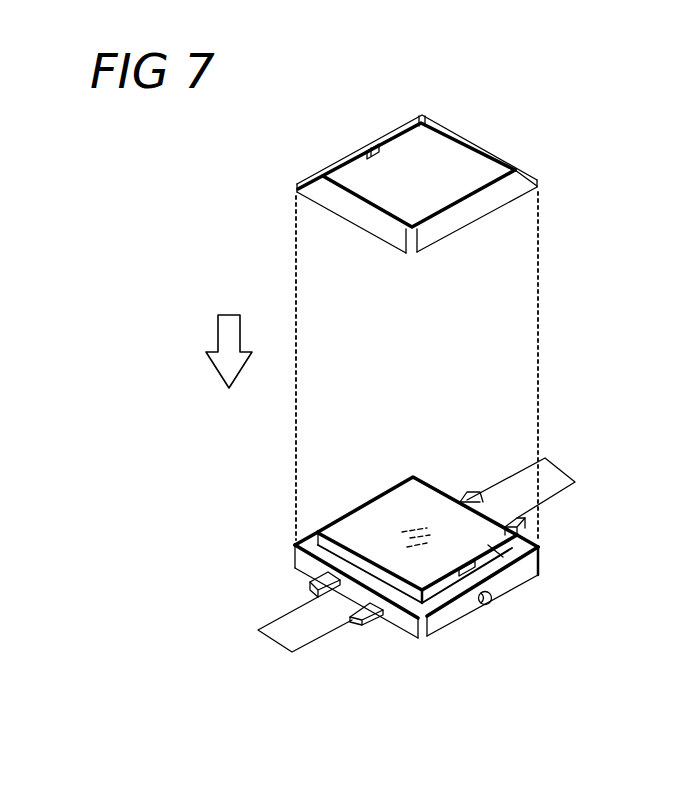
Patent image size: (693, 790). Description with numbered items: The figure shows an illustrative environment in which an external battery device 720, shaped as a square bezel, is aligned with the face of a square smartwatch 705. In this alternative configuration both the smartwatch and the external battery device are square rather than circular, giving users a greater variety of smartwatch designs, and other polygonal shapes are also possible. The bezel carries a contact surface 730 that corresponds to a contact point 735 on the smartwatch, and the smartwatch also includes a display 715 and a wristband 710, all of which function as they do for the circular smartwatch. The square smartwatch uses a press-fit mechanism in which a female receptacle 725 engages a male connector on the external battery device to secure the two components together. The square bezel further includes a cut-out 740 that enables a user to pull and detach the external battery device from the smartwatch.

The smartwatch 705 is at (275, 502).
The wristband 710 is at (576, 484).
The display 715 is at (538, 576).
The external battery device 720 is at (371, 146).
The female receptacle 725 is at (362, 579).
The contact surface 730 is at (363, 178).
The contact point 735 is at (467, 576).
The cut-out 740 is at (345, 218).